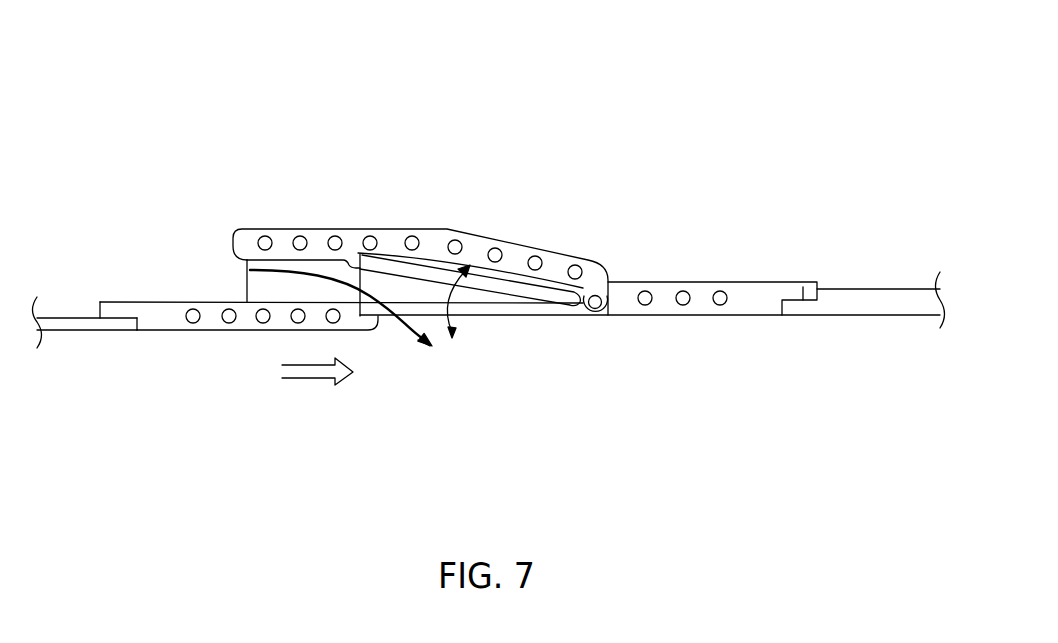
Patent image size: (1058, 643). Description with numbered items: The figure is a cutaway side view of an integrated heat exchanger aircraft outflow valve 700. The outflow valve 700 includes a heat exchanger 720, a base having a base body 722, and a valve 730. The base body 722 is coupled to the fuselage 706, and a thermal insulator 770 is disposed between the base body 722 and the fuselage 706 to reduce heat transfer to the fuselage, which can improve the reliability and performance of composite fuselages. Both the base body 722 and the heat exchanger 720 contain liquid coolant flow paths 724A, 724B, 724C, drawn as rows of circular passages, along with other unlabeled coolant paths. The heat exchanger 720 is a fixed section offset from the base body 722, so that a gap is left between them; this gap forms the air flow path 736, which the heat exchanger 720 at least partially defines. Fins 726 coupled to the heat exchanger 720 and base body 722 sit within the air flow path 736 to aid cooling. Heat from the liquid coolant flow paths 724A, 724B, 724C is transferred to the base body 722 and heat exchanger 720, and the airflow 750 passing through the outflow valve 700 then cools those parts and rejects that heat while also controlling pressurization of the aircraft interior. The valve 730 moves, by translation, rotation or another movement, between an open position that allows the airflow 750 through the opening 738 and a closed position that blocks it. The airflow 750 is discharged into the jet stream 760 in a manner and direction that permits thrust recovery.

The outflow valve 700 is at (489, 247).
The fuselage 706 is at (878, 316).
The heat exchanger 720 is at (420, 238).
The base body 722 is at (712, 252).
The liquid coolant flow path 724A is at (193, 324).
The liquid coolant flow path 724B is at (266, 238).
The liquid coolant flow path 724C is at (650, 290).
The fins 726 is at (230, 258).
The valve 730 is at (509, 298).
The air flow path 736 is at (421, 350).
The opening 738 is at (480, 316).
The airflow 750 is at (250, 270).
The jet stream 760 is at (327, 387).
The thermal insulator 770 is at (802, 287).